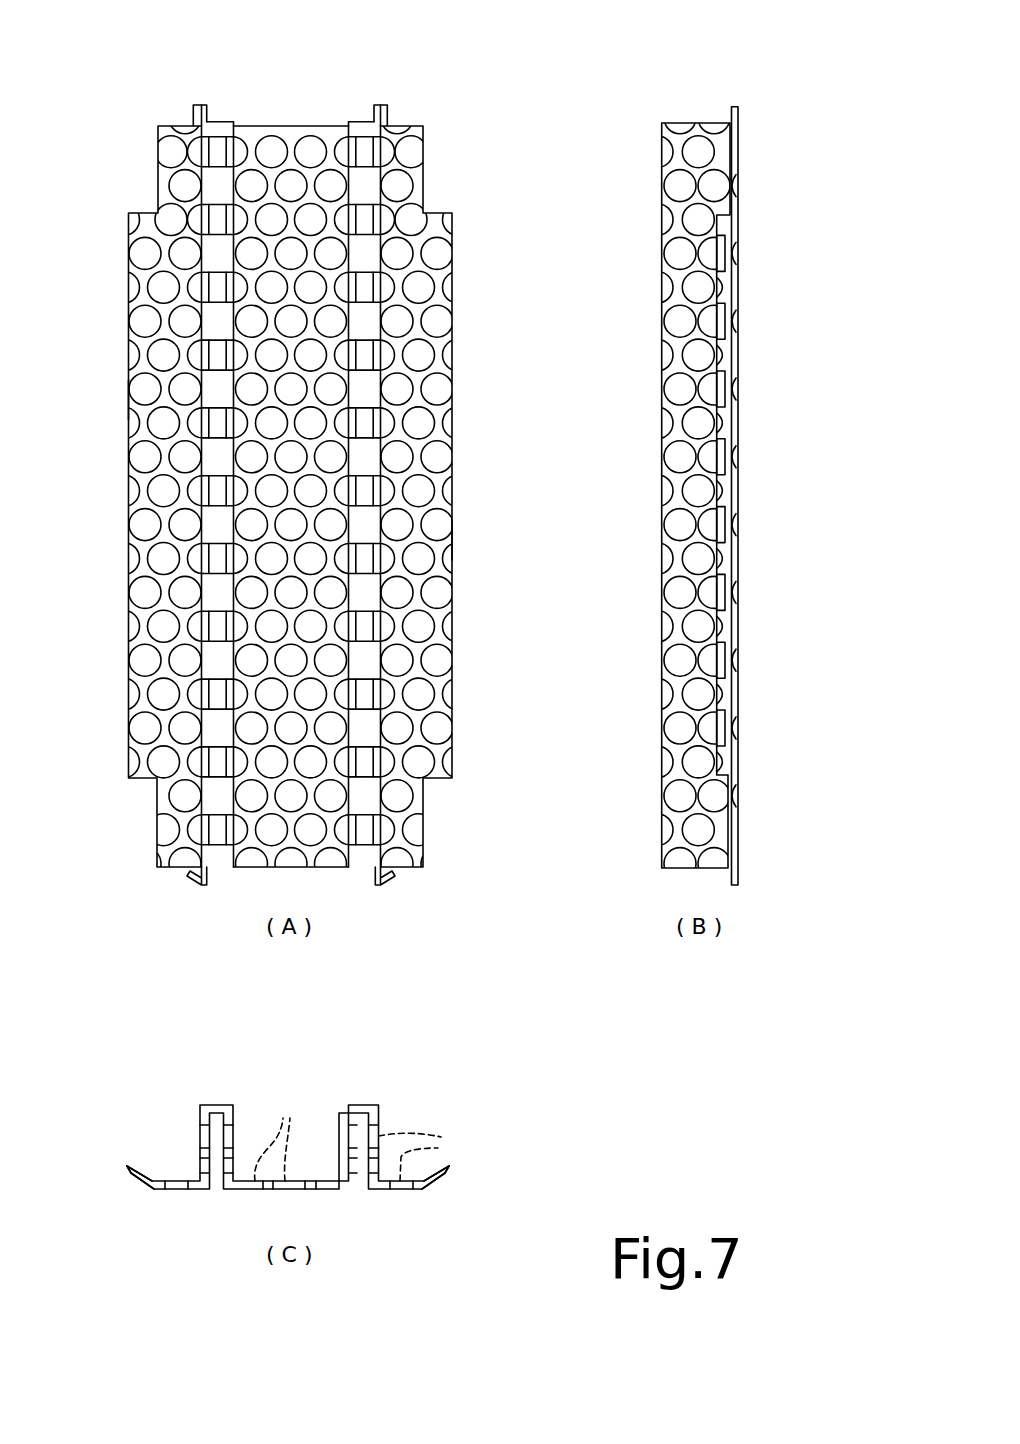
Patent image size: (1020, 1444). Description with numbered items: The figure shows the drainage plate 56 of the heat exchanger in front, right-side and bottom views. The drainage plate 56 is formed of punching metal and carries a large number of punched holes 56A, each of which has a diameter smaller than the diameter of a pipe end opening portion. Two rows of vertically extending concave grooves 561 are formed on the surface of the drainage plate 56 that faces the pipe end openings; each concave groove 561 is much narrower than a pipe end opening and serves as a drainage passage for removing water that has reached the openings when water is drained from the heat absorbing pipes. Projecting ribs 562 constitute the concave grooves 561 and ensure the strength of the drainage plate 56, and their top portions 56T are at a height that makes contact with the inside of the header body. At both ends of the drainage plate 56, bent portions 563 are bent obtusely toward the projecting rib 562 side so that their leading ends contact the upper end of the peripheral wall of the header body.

The drainage plate 56 is at (450, 156).
The punched holes 56A is at (262, 290).
The top portions 56T is at (220, 127).
The concave grooves 561 is at (217, 1197).
The projecting ribs 562 is at (350, 183).
The bent portions 563 is at (128, 402).